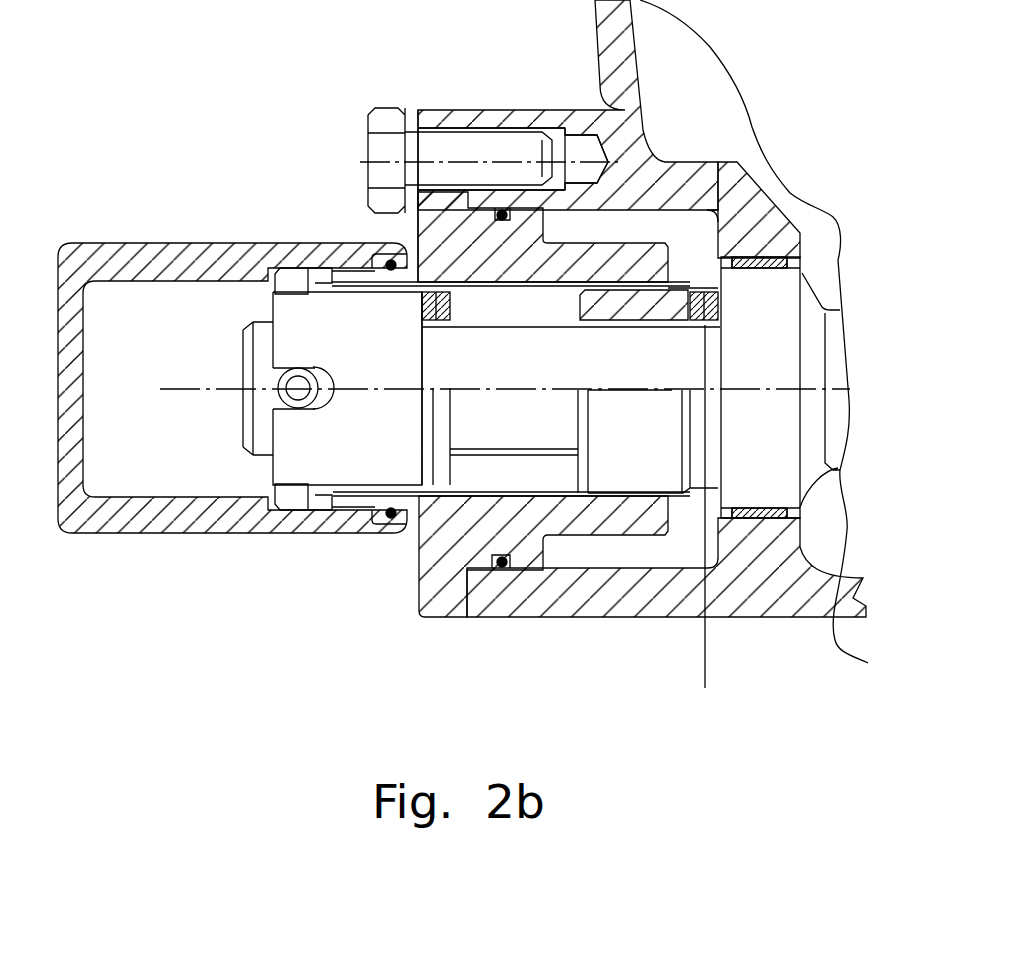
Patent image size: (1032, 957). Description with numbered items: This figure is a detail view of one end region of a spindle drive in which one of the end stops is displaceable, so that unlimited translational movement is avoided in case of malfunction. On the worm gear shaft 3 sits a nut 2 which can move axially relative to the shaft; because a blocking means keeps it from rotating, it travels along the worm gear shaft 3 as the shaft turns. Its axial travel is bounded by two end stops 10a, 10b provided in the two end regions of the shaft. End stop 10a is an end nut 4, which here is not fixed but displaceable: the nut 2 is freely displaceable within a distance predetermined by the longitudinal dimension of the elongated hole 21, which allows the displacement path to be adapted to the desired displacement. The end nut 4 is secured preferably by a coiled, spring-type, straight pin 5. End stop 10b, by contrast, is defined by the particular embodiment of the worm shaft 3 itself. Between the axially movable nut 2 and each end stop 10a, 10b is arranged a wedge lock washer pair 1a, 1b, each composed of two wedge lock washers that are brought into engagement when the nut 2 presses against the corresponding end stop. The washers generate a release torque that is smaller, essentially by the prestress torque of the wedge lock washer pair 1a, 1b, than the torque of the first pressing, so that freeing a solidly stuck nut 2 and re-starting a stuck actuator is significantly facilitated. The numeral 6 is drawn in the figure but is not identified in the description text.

The wedge lock washer pair 1a is at (435, 477).
The wedge lock washer pair 1b is at (653, 506).
The nut 2 is at (635, 445).
The worm gear shaft 3 is at (760, 440).
The end nut 4 is at (367, 445).
The coiled, spring-type, straight pin 5 is at (298, 353).
The housing 6 is at (502, 515).
The end stop 10a is at (423, 353).
The end stop 10b is at (720, 358).
The elongated hole 21 is at (333, 378).